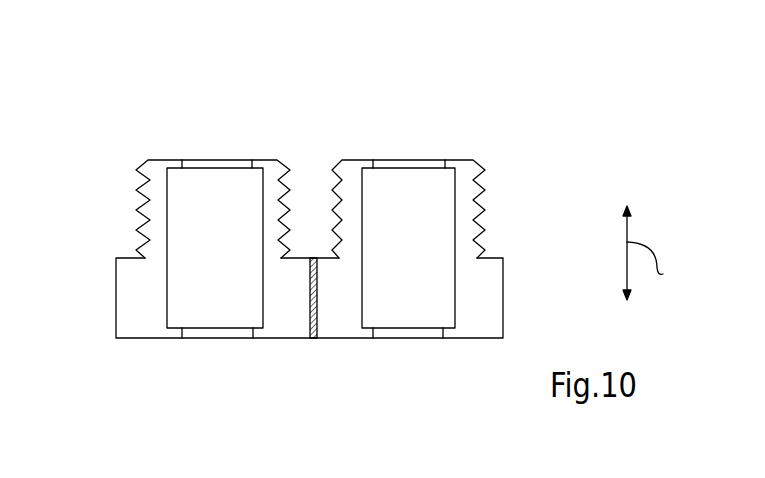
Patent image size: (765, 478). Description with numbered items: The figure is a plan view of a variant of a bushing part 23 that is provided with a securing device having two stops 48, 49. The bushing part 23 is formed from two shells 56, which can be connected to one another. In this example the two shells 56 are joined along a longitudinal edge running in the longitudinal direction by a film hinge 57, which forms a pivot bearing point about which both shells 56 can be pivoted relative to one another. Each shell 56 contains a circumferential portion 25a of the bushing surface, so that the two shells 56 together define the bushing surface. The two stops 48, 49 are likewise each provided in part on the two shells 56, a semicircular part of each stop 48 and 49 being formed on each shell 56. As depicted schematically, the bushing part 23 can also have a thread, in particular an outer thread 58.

The bushing part 23 is at (329, 249).
The circumferential portion of the bushing surface 25a is at (197, 235).
The stop 49 is at (370, 160).
The outer thread 58 is at (336, 186).
The film hinge 57 is at (313, 340).
The shell 56 is at (143, 340).
The stop 48 is at (370, 340).